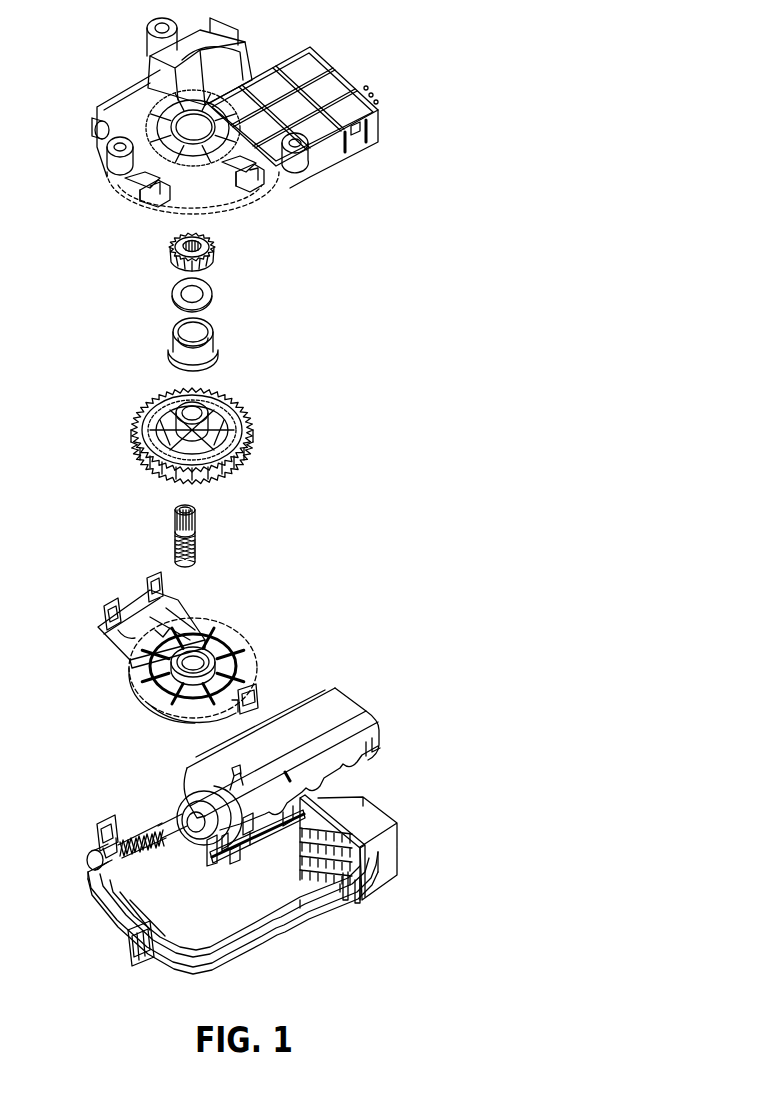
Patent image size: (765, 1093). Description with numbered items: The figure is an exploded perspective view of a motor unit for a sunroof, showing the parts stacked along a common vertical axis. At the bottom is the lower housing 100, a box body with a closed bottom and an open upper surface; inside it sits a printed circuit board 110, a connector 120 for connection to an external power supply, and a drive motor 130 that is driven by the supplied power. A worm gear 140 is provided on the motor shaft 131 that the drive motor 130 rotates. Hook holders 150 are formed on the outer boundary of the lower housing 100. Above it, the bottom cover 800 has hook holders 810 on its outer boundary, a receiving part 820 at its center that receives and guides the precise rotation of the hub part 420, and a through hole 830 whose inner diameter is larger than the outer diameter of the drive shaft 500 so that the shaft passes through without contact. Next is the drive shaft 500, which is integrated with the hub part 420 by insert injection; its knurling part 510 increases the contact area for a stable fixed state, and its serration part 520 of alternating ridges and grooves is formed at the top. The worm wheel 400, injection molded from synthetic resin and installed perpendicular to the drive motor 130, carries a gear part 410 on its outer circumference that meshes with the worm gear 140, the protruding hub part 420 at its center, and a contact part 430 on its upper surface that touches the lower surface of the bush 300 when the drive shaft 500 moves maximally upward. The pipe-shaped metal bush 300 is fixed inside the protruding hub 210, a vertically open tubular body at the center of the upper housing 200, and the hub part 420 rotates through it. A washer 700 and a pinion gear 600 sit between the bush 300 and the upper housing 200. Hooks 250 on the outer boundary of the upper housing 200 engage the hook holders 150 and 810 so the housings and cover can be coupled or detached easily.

The lower housing 100 is at (100, 919).
The printed circuit board 110 is at (216, 920).
The connector 120 is at (375, 813).
The drive motor 130 is at (351, 710).
The motor shaft 131 is at (183, 800).
The worm gear 140 is at (137, 826).
The hook holders 150 is at (107, 826).
The upper housing 200 is at (314, 51).
The protruding hub 210 is at (145, 86).
The hooks 250 is at (160, 213).
The bush 300 is at (225, 344).
The worm wheel 400 is at (267, 436).
The gear part 410 is at (132, 448).
The hub part 420 is at (152, 407).
The contact part 430 is at (240, 415).
The drive shaft 500 is at (212, 542).
The knurling part 510 is at (173, 552).
The serration part 520 is at (177, 512).
The pinion gear 600 is at (222, 253).
The washer 700 is at (224, 296).
The bottom cover 800 is at (232, 620).
The hook holders 810 is at (102, 605).
The receiving part 820 is at (140, 654).
The through hole 830 is at (230, 654).